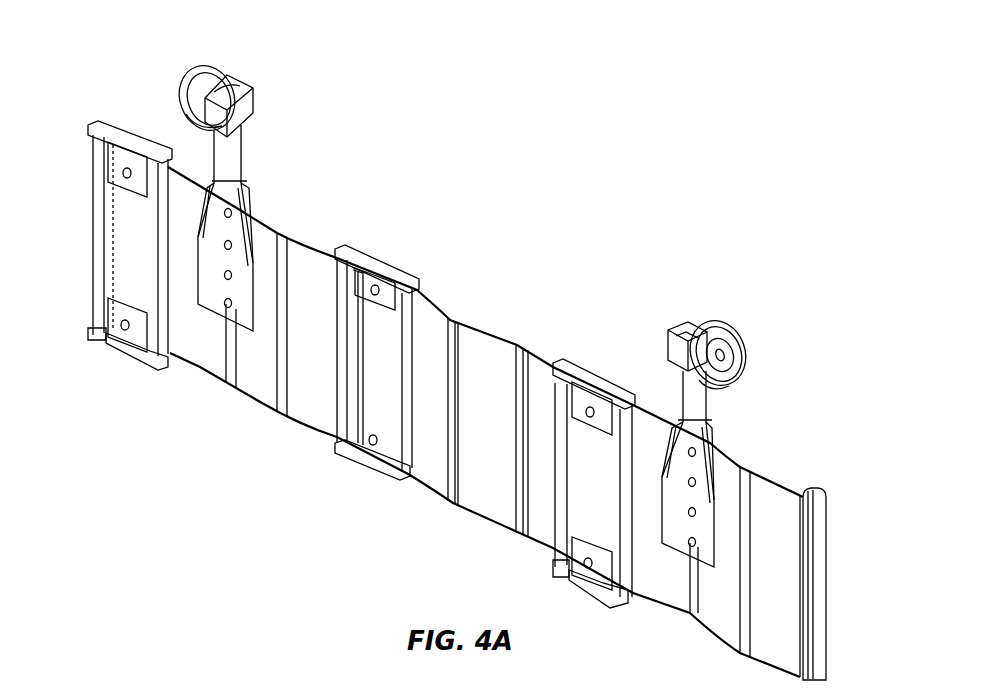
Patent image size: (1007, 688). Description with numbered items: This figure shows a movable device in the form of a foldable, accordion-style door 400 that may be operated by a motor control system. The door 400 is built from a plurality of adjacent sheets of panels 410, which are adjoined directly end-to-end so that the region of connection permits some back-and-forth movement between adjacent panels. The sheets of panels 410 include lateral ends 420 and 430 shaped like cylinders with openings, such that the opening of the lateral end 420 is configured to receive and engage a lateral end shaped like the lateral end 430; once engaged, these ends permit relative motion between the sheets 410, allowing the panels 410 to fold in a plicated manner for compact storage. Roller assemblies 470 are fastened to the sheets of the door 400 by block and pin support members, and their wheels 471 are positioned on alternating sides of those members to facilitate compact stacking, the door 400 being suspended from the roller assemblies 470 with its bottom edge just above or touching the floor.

The accordion-style door 400 is at (356, 113).
The sheets of panels 410 is at (257, 382).
The lateral end 420 is at (827, 555).
The lateral end 430 is at (90, 226).
The roller assembly 470 is at (243, 80).
The wheel 471 is at (205, 78).